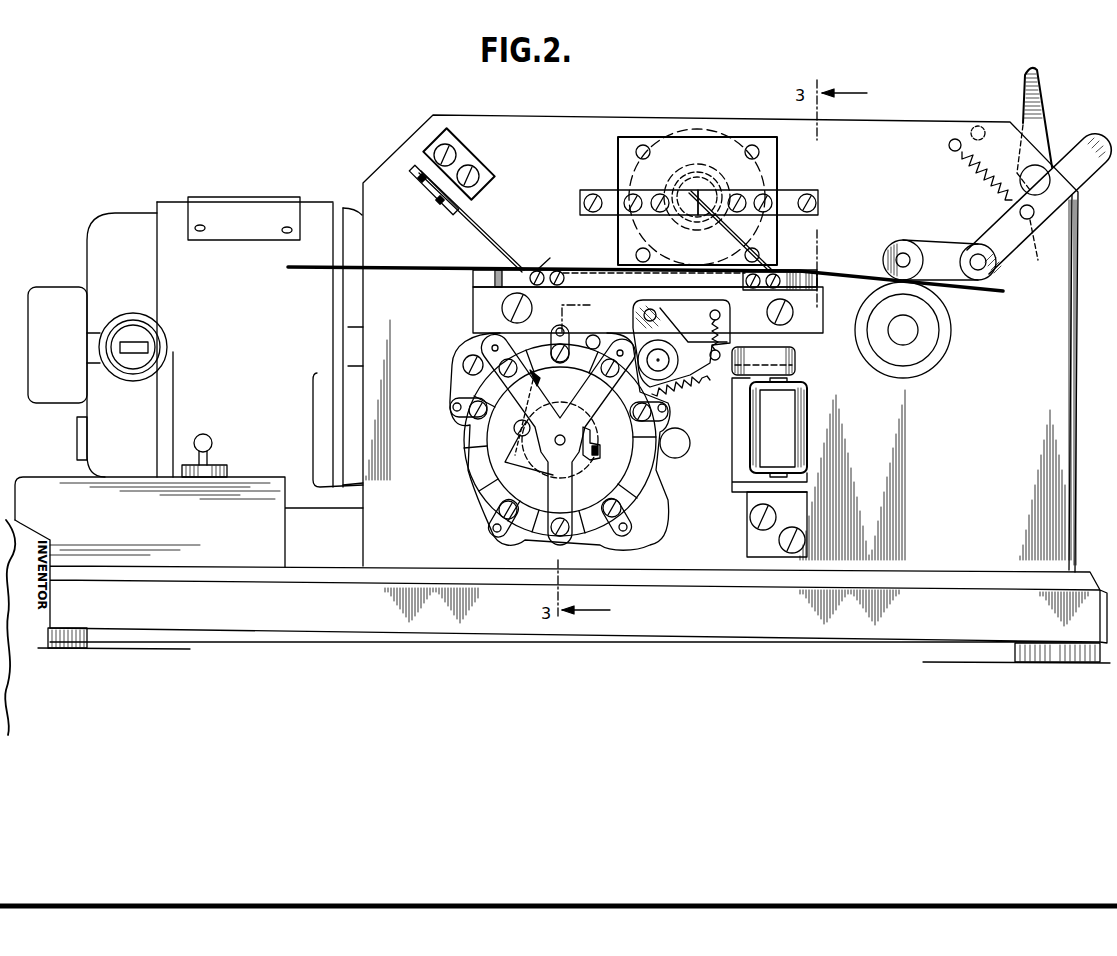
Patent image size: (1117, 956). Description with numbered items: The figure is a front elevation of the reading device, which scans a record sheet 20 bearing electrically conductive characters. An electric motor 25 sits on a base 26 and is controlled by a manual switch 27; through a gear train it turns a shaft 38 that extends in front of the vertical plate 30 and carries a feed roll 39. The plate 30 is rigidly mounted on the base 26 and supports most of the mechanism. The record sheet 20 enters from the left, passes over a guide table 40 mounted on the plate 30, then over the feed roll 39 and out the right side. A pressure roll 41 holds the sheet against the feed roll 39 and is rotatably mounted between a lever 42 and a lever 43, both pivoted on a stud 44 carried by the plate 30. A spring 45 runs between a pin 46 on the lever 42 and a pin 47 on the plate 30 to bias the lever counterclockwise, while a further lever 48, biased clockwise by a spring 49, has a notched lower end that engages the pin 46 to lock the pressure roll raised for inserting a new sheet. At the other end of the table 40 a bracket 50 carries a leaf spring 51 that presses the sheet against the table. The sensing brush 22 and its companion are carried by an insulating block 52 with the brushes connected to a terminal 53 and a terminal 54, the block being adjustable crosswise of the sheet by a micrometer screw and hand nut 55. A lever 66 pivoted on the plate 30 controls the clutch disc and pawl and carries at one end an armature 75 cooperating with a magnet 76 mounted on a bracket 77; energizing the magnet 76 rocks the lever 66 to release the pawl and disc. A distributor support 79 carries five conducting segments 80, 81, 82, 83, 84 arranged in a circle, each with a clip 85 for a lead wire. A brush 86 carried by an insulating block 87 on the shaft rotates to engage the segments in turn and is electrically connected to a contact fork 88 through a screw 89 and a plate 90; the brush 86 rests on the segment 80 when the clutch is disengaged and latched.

The record sheet 20 is at (433, 275).
The sensing brush 22 is at (767, 260).
The electric motor 25 is at (170, 203).
The base 26 is at (445, 627).
The manual switch 27 is at (210, 452).
The plate 30 is at (403, 152).
The shaft 38 is at (915, 338).
The feed roll 39 is at (952, 332).
The guide table 40 is at (473, 300).
The pressure roll 41 is at (897, 240).
The lever 42 is at (997, 223).
The lever 43 is at (938, 245).
The stud 44 is at (983, 267).
The spring 45 is at (983, 177).
The pin 46 is at (1037, 222).
The pin 47 is at (948, 145).
The lever 48 is at (1023, 105).
The spring 49 is at (993, 160).
The bracket 50 is at (433, 147).
The leaf spring 51 is at (488, 227).
The insulating block 52 is at (777, 170).
The terminal 53 is at (602, 187).
The terminal 54 is at (800, 192).
The hand nut 55 is at (710, 132).
The lever 66 is at (797, 352).
The armature 75 is at (797, 368).
The magnet 76 is at (805, 427).
The bracket 77 is at (750, 527).
The distributor support 79 is at (653, 493).
The conducting segment 80 is at (558, 439).
The conducting segment 81 is at (463, 428).
The conducting segment 82 is at (490, 510).
The conducting segment 83 is at (607, 530).
The conducting segment 84 is at (690, 430).
The clip 85 is at (568, 332).
The brush 86 is at (538, 381).
The insulating block 87 is at (529, 465).
The contact fork 88 is at (572, 493).
The screw 89 is at (517, 431).
The plate 90 is at (590, 423).